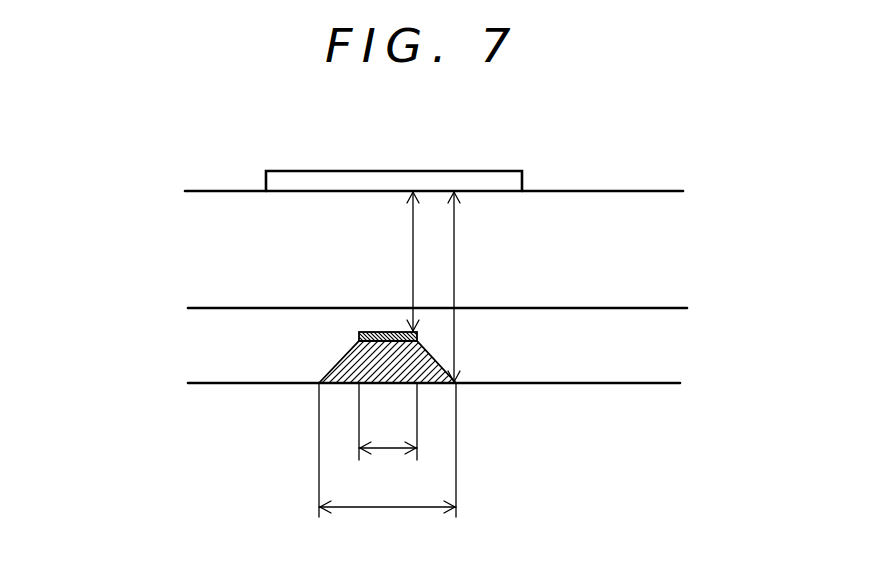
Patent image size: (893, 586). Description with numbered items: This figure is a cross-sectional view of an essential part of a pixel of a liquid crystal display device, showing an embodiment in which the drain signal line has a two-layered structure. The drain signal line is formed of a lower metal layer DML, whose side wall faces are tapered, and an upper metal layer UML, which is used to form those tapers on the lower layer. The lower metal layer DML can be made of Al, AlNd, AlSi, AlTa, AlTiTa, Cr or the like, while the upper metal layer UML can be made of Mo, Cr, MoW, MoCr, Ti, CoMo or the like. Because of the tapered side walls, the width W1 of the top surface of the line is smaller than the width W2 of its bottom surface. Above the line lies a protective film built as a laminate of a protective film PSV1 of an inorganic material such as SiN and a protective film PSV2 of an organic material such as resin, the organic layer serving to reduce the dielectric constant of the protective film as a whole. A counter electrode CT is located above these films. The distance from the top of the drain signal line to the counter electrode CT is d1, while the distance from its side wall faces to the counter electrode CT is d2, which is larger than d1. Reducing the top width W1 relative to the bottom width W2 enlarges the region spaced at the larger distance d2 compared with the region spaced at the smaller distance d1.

The counter electrode CT is at (500, 178).
The protective film PSV2 is at (643, 252).
The protective film PSV1 is at (632, 352).
The metal layer UML is at (358, 338).
The metal layer DML is at (342, 368).
The distance d1 is at (400, 261).
The distance d2 is at (476, 287).
The width of the top surface W1 is at (388, 434).
The width of the bottom surface W2 is at (387, 462).